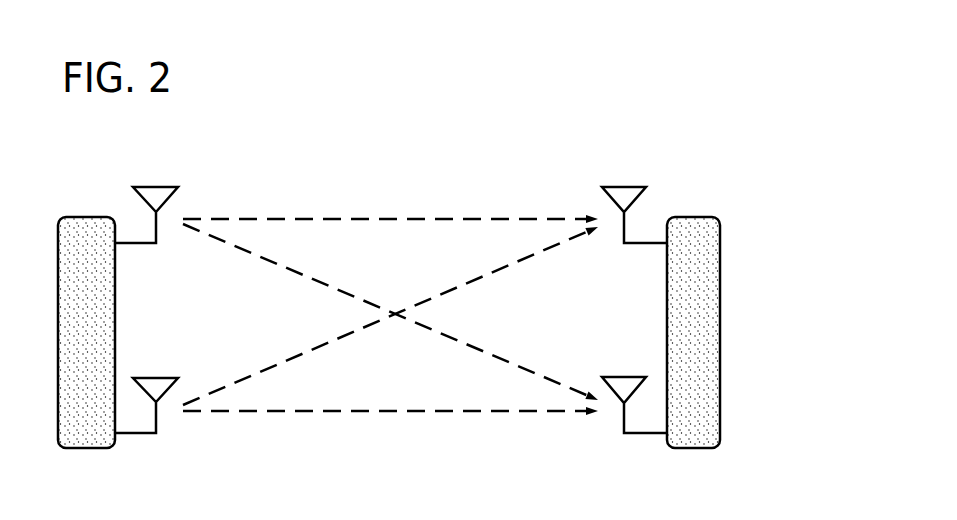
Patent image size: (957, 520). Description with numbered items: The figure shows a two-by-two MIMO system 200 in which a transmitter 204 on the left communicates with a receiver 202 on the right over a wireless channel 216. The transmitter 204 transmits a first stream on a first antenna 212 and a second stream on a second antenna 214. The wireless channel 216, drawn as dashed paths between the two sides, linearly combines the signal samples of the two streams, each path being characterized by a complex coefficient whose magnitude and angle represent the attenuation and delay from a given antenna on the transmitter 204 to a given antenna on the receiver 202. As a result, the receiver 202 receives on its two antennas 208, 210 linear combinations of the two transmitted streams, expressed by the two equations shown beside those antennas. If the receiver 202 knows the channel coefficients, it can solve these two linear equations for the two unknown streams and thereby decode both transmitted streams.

The 2×2 MIMO system 200 is at (387, 493).
The receiver 202 is at (722, 382).
The transmitter 204 is at (80, 217).
The first receiver antenna 208 is at (645, 188).
The second receiver antenna 210 is at (625, 377).
The first antenna 212 is at (140, 186).
The second antenna 214 is at (162, 397).
The wireless channel 216 is at (334, 134).